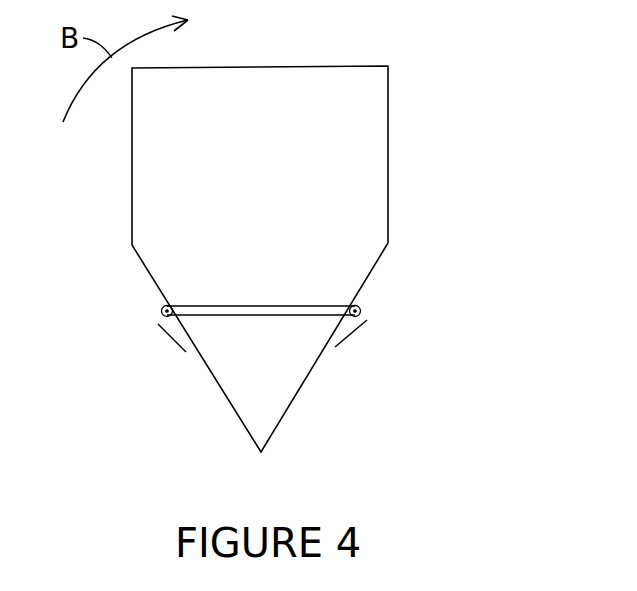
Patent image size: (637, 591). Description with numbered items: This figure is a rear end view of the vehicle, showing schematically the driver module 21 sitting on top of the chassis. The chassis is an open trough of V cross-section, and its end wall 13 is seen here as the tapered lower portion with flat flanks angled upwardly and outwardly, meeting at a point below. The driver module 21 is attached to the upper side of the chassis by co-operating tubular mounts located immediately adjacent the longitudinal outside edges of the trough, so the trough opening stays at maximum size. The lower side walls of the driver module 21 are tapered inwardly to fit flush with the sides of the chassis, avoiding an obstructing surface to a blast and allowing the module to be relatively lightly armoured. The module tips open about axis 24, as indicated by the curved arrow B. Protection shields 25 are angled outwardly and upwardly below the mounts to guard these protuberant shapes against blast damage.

The driver module 21 is at (372, 108).
The end wall 13 is at (282, 393).
The axis 24 is at (361, 317).
The protection shield 25 is at (180, 340).